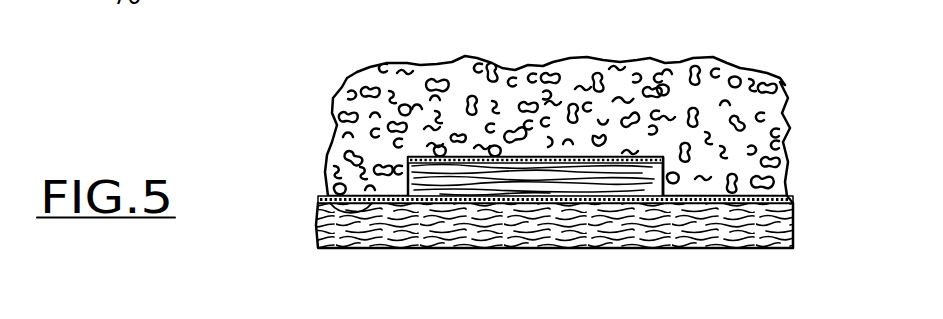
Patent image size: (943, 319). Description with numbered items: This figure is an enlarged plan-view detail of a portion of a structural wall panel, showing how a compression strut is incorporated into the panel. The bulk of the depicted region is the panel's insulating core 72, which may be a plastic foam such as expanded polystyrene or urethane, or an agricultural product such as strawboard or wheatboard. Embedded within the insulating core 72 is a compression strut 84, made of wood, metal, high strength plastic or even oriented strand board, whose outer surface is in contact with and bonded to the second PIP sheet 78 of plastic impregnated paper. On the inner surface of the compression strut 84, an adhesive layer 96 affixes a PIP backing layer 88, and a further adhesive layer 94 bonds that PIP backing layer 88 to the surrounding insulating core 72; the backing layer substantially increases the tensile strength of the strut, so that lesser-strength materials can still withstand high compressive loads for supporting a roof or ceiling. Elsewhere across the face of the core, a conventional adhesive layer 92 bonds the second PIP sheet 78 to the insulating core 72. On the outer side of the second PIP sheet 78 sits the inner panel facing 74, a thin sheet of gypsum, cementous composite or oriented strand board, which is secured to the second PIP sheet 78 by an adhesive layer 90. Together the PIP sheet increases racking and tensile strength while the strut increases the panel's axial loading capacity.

The insulating core 72 is at (718, 90).
The inner panel facing 74 is at (320, 222).
The second plastic impregnated paper sheet 78 is at (793, 198).
The compression strut 84 is at (407, 156).
The PIP backing layer 88 is at (664, 157).
The adhesive layer 90 is at (320, 203).
The adhesive layer 92 is at (350, 196).
The adhesive layer 94 is at (458, 157).
The adhesive layer 96 is at (553, 157).